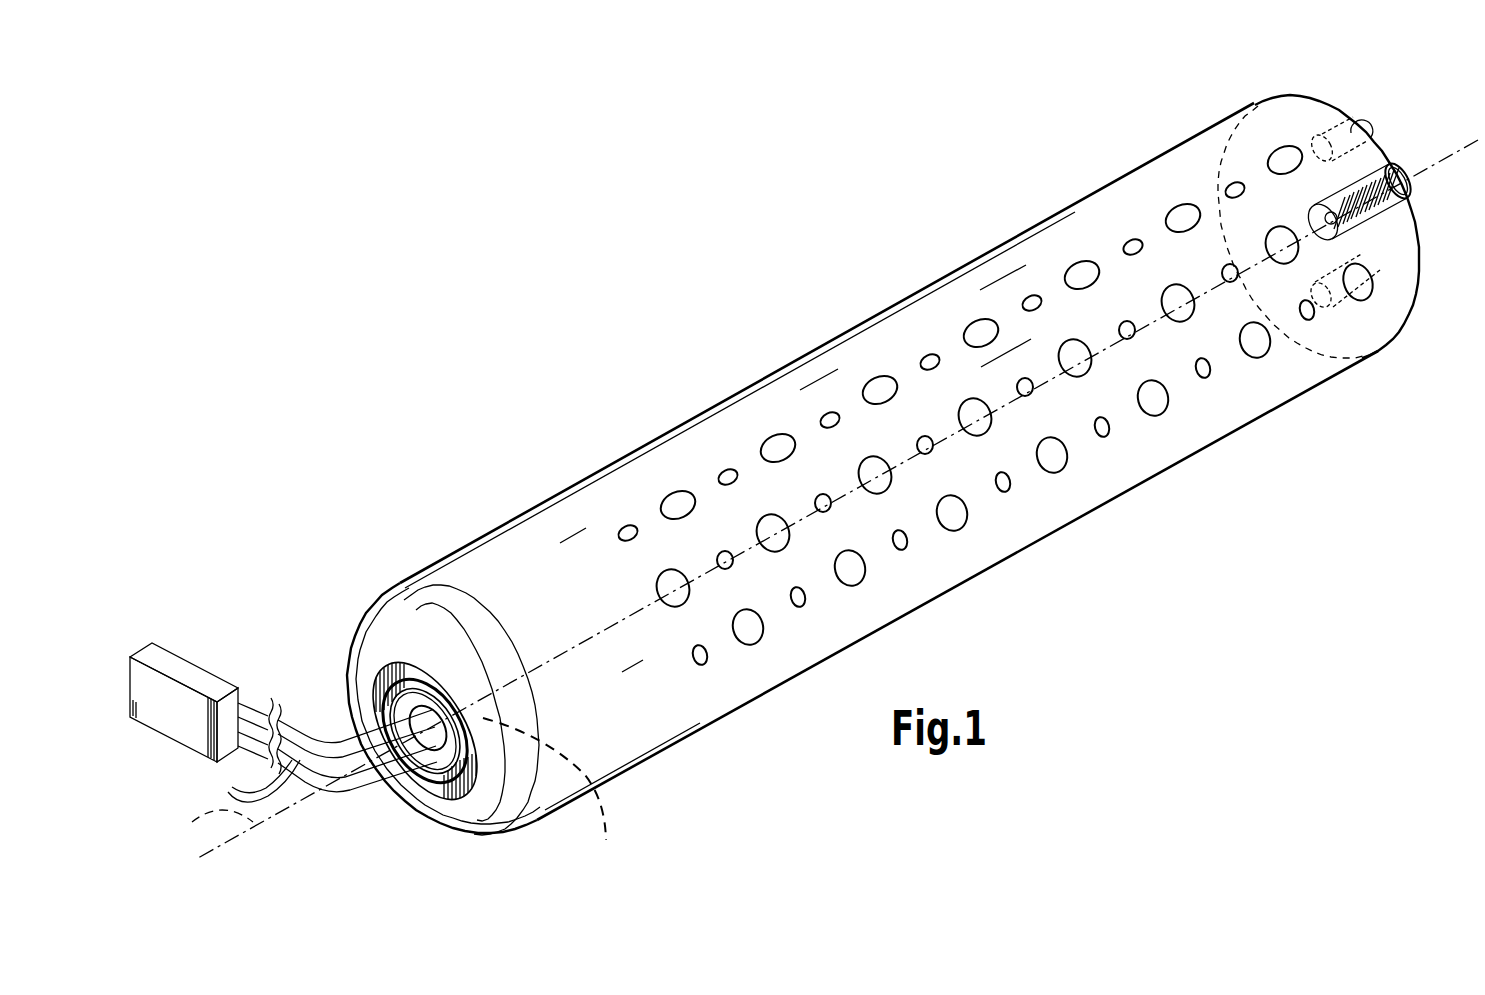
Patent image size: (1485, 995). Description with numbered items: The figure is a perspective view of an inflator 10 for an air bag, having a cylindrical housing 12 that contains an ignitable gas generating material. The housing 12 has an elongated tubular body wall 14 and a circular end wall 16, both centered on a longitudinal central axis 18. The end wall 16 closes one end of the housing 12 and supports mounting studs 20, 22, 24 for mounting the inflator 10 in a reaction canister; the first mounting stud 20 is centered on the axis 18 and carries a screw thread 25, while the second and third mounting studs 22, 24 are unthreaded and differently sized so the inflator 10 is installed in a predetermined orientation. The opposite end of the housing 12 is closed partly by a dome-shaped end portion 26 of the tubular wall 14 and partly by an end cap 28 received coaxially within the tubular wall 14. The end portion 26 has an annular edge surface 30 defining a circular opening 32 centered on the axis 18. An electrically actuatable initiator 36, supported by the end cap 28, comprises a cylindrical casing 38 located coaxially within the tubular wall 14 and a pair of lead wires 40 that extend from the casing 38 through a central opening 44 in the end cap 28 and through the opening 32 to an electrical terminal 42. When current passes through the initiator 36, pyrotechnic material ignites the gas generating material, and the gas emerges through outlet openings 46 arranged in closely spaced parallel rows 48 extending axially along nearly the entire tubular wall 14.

The inflator 10 is at (1028, 128).
The cylindrical housing 12 is at (984, 240).
The tubular body wall 14 is at (866, 366).
The end wall 16 is at (1294, 124).
The longitudinal central axis 18 is at (815, 499).
The first mounting stud 20 is at (1406, 168).
The second mounting stud 22 is at (1349, 121).
The third mounting stud 24 is at (1380, 272).
The screw thread 25 is at (1408, 197).
The end portion of the tubular wall 26 is at (406, 612).
The end cap 28 is at (384, 666).
The annular edge surface 30 is at (418, 800).
The circular opening 32 is at (396, 778).
The electrically actuatable initiator 36 is at (604, 812).
The cylindrical casing 38 is at (558, 790).
The electrical lead wires 40 is at (314, 750).
The electrical terminal 42 is at (178, 670).
The central opening in the end cap 44 is at (405, 710).
The outlet openings 46 is at (764, 436).
The parallel rows 48 is at (610, 546).